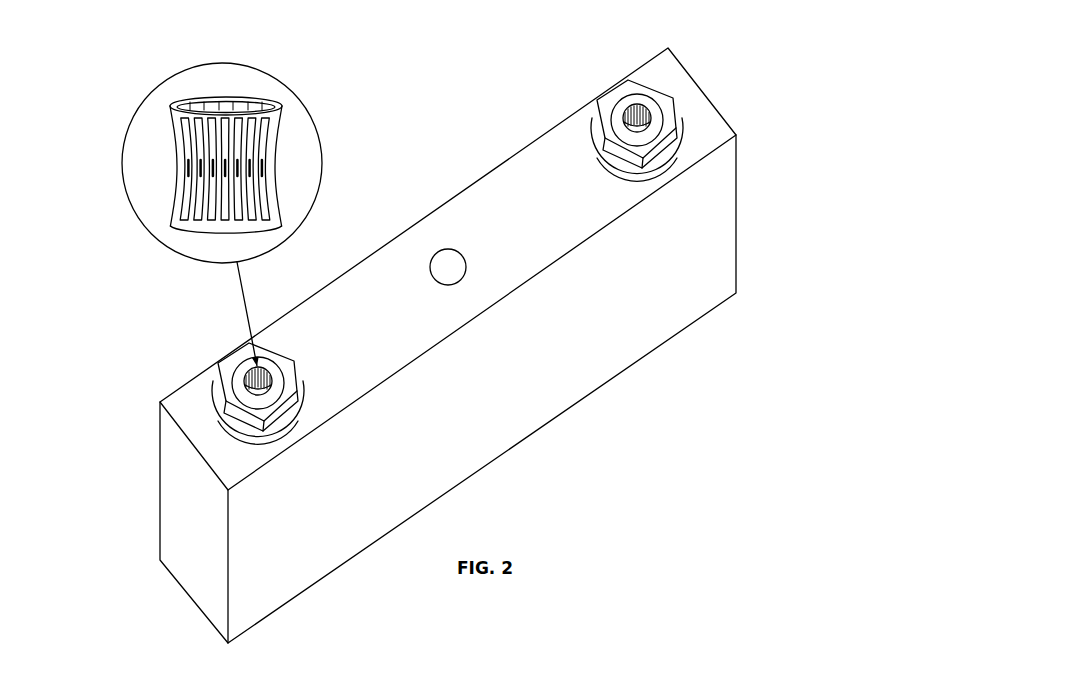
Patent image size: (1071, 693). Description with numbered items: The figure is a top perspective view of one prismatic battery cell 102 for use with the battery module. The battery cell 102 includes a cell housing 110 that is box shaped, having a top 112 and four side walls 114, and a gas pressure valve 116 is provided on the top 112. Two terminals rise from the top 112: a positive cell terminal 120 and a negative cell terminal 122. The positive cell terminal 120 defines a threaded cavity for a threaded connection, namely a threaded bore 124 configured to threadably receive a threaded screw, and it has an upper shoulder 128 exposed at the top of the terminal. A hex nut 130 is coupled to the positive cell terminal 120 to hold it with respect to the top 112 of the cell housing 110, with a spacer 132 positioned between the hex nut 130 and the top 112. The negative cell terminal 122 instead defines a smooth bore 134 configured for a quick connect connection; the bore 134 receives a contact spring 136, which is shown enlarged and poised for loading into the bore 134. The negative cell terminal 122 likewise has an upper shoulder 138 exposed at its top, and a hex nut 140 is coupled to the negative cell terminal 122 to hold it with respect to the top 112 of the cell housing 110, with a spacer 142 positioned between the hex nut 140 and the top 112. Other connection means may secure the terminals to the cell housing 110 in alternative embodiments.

The battery cell 102 is at (393, 133).
The cell housing 110 is at (563, 397).
The top 112 is at (538, 155).
The side walls 114 is at (198, 584).
The gas pressure valve 116 is at (448, 267).
The positive cell terminal 120 is at (620, 103).
The negative cell terminal 122 is at (242, 368).
The threaded bore 124 is at (640, 102).
The upper shoulder 128 is at (655, 107).
The hex nut 130 is at (668, 122).
The spacer 132 is at (672, 158).
The smooth bore 134 is at (238, 382).
The contact spring 136 is at (175, 187).
The upper shoulder 138 is at (248, 408).
The hex nut 140 is at (247, 417).
The spacer 142 is at (247, 437).